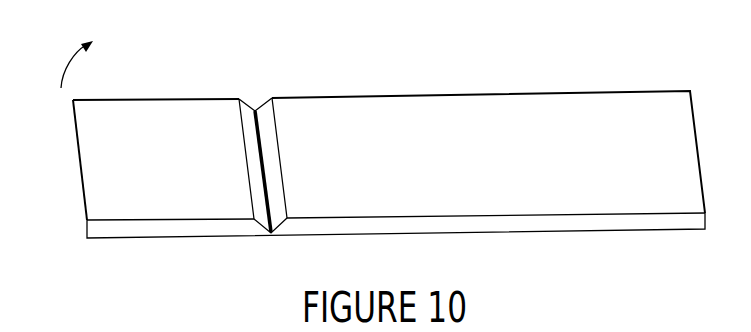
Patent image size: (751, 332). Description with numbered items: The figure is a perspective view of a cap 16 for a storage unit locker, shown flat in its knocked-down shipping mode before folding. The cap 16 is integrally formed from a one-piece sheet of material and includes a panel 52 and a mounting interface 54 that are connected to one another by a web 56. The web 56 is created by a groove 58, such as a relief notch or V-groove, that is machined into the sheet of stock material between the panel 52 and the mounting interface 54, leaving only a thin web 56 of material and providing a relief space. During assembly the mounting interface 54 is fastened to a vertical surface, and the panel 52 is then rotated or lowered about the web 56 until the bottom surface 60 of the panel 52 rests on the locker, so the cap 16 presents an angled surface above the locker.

The cap 16 is at (404, 157).
The panel 52 is at (672, 232).
The mounting interface 54 is at (133, 100).
The web 56 is at (271, 234).
The groove 58 is at (254, 105).
The bottom surface 60 is at (512, 169).